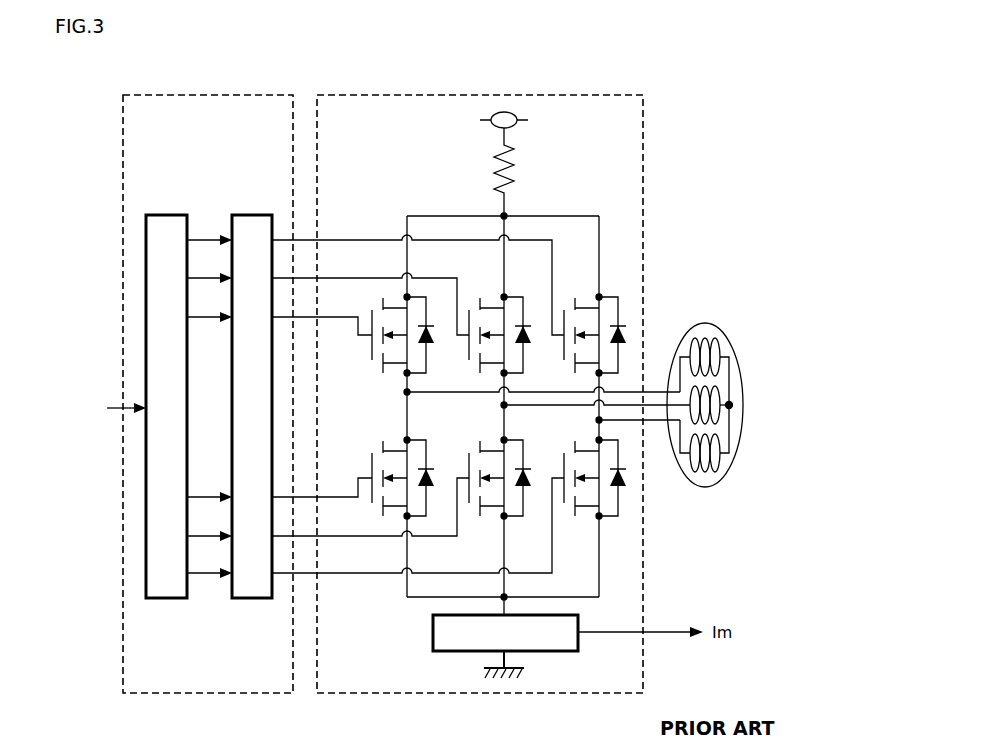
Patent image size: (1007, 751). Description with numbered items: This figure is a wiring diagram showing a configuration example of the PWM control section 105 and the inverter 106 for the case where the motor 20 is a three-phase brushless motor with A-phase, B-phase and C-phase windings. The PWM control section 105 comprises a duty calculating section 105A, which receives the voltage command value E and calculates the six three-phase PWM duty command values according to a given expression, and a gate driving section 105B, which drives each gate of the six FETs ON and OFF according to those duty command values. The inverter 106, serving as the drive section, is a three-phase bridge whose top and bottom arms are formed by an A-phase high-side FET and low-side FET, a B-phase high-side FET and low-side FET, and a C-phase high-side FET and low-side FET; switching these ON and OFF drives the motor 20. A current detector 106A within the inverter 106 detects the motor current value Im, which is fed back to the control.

The PWM control section 105 is at (272, 93).
The duty calculating section 105A is at (183, 207).
The gate driving section 105B is at (272, 207).
The inverter 106 is at (617, 95).
The current detector 106A is at (578, 617).
The motor 20 is at (717, 327).